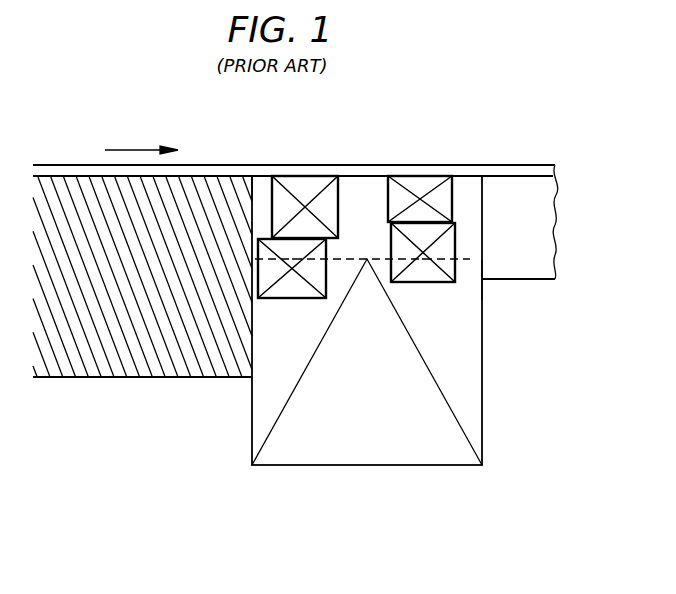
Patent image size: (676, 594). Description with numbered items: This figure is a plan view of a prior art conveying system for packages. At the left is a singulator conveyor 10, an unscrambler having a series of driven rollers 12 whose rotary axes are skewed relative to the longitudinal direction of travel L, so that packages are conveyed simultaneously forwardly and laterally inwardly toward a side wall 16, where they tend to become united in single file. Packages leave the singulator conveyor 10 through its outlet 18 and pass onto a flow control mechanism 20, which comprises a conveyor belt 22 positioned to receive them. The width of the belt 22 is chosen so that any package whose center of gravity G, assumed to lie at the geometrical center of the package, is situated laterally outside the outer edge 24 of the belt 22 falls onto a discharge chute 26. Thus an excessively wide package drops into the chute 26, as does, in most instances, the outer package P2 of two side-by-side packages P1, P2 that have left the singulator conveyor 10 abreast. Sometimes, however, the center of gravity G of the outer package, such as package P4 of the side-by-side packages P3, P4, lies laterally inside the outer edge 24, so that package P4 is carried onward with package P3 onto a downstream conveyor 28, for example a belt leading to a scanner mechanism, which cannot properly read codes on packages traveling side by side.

The singulator conveyor 10 is at (148, 380).
The driven rollers 12 is at (103, 365).
The side wall 16 is at (55, 178).
The outlet 18 is at (253, 187).
The flow control mechanism 20 is at (430, 468).
The conveyor belt 22 is at (467, 187).
The outer edge 24 is at (467, 262).
The discharge chute 26 is at (334, 453).
The downstream conveyor 28 is at (535, 190).
The package P1 is at (316, 183).
The outer package P2 is at (293, 290).
The package P3 is at (422, 183).
The outer package P4 is at (423, 275).
The center of gravity G is at (293, 263).
The direction of travel L is at (132, 150).